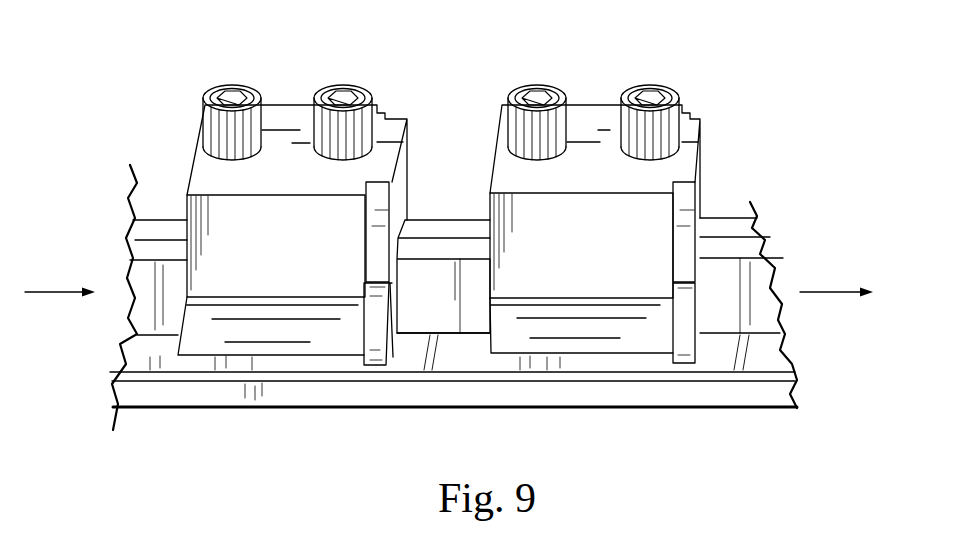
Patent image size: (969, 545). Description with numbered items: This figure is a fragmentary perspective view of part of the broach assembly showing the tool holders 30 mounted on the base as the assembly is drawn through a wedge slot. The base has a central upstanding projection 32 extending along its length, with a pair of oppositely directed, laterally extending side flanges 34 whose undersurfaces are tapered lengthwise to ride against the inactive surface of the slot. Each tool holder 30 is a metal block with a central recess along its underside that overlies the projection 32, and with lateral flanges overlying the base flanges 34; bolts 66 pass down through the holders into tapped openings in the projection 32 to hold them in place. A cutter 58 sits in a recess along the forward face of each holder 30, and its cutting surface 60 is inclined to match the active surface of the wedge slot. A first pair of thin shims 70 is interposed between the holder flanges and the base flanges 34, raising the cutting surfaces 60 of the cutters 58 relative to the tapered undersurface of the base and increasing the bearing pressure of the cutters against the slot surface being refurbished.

The tool holder 30 is at (271, 205).
The central upstanding projection 32 is at (441, 222).
The side flange 34 is at (161, 398).
The cutter 58 is at (389, 341).
The cutting surface 60 is at (367, 336).
The socket head bolt 66 is at (211, 96).
The shim 70 is at (798, 374).